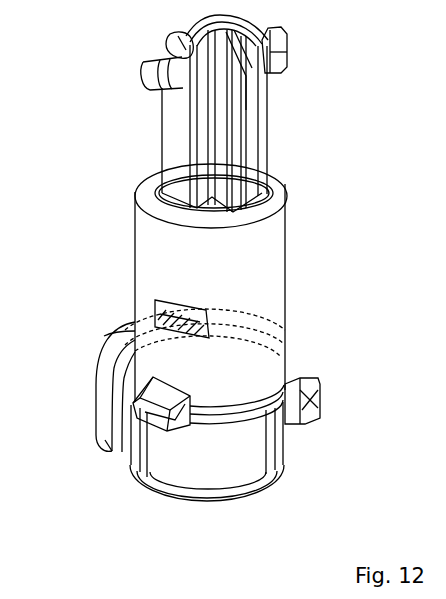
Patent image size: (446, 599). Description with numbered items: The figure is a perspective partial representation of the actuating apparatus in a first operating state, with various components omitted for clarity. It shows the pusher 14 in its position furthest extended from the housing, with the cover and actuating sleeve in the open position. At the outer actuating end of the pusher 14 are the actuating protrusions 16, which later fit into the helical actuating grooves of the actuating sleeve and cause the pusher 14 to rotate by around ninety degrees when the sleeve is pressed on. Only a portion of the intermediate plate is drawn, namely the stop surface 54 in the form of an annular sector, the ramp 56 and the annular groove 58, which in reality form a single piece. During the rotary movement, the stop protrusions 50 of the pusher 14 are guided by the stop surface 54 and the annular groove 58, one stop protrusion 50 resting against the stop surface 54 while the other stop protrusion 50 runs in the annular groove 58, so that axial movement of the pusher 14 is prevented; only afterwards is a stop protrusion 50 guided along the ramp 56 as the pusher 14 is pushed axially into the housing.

The pusher 14 is at (272, 273).
The actuating protrusions 16 is at (150, 79).
The stop protrusions 50 is at (155, 418).
The stop surface 54 is at (128, 332).
The ramp 56 is at (107, 388).
The annular groove 58 is at (280, 416).